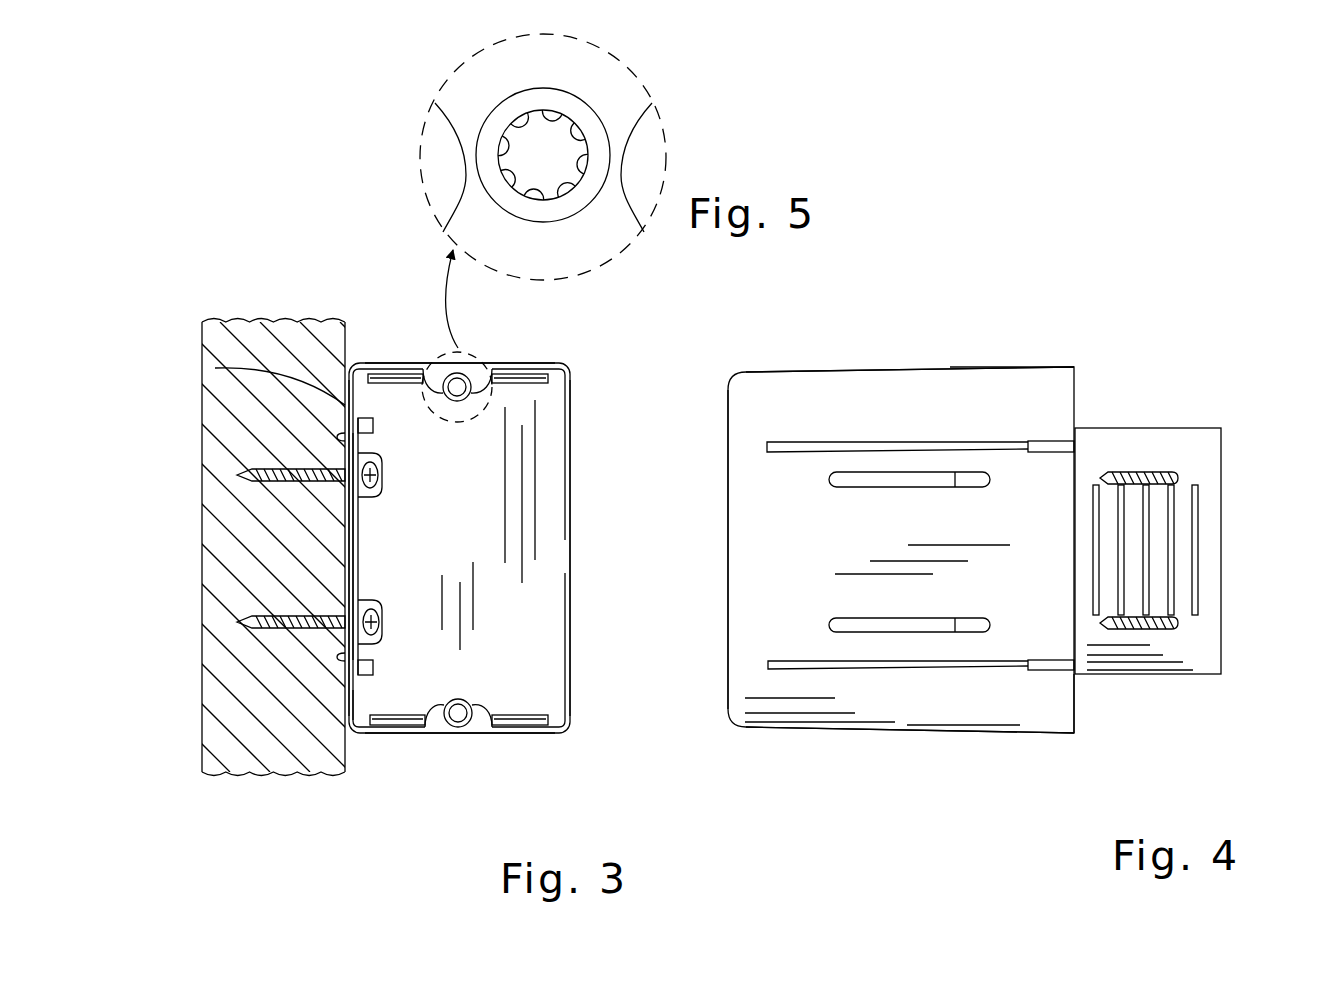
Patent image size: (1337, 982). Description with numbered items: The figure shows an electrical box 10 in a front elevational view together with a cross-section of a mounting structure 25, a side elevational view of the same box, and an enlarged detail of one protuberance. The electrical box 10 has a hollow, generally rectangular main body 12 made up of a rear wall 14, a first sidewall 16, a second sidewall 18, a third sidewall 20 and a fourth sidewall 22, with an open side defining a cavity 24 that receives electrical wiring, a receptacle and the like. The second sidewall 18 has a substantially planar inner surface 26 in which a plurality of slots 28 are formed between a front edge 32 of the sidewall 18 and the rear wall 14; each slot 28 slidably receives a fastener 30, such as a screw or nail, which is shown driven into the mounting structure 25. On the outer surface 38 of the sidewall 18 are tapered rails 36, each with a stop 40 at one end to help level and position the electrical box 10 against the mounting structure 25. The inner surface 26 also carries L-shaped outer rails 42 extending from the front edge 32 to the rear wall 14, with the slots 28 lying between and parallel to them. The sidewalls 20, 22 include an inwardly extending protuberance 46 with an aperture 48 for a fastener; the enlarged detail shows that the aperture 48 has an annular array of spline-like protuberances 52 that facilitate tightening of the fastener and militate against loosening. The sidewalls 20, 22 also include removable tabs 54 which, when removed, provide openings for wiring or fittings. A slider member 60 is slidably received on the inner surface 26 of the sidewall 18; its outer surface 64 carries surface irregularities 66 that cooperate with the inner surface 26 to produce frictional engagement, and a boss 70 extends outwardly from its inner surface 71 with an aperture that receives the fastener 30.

In FIG. 3, the electrical box 10 is at (375, 302).
In FIG. 4, the electrical box 10 is at (757, 340).
In FIG. 3, the main body 12 is at (372, 740).
In FIG. 4, the main body 12 is at (818, 735).
In FIG. 4, the rear wall 14 is at (728, 424).
In FIG. 3, the first sidewall 16 is at (570, 605).
In FIG. 3, the second sidewall 18 is at (348, 395).
In FIG. 4, the second sidewall 18 is at (1040, 370).
In FIG. 3, the third sidewall 20 is at (540, 735).
In FIG. 4, the third sidewall 20 is at (980, 735).
In FIG. 3, the fourth sidewall 22 is at (537, 363).
In FIG. 4, the fourth sidewall 22 is at (938, 367).
In FIG. 3, the cavity 24 is at (525, 546).
In FIG. 3, the mounting structure 25 is at (222, 357).
In FIG. 3, the inner surface 26 is at (215, 368).
In FIG. 4, the slots 28 is at (882, 480).
In FIG. 3, the fastener 30 is at (287, 617).
In FIG. 4, the fastener 30 is at (1133, 475).
In FIG. 3, the front edge 32 is at (353, 692).
In FIG. 4, the front edge 32 is at (1076, 702).
In FIG. 4, the rails 36 is at (767, 447).
In FIG. 4, the outer surface 38 is at (1026, 602).
In FIG. 3, the stop 40 is at (337, 437).
In FIG. 4, the stop 40 is at (1045, 447).
In FIG. 3, the outer rails 42 is at (373, 428).
In FIG. 3, the protuberance 46 is at (433, 405).
In FIG. 5, the protuberance 46 is at (460, 190).
In FIG. 3, the aperture 48 is at (457, 385).
In FIG. 5, the aperture 48 is at (543, 157).
In FIG. 5, the spline-like protuberances 52 is at (537, 197).
In FIG. 3, the removable tab 54 is at (397, 375).
In FIG. 3, the slider member 60 is at (366, 533).
In FIG. 4, the slider member 60 is at (1223, 500).
In FIG. 4, the outer surface 64 is at (1176, 466).
In FIG. 4, the surface irregularities 66 is at (1172, 578).
In FIG. 3, the boss 70 is at (380, 492).
In FIG. 3, the inner surface 71 is at (360, 566).